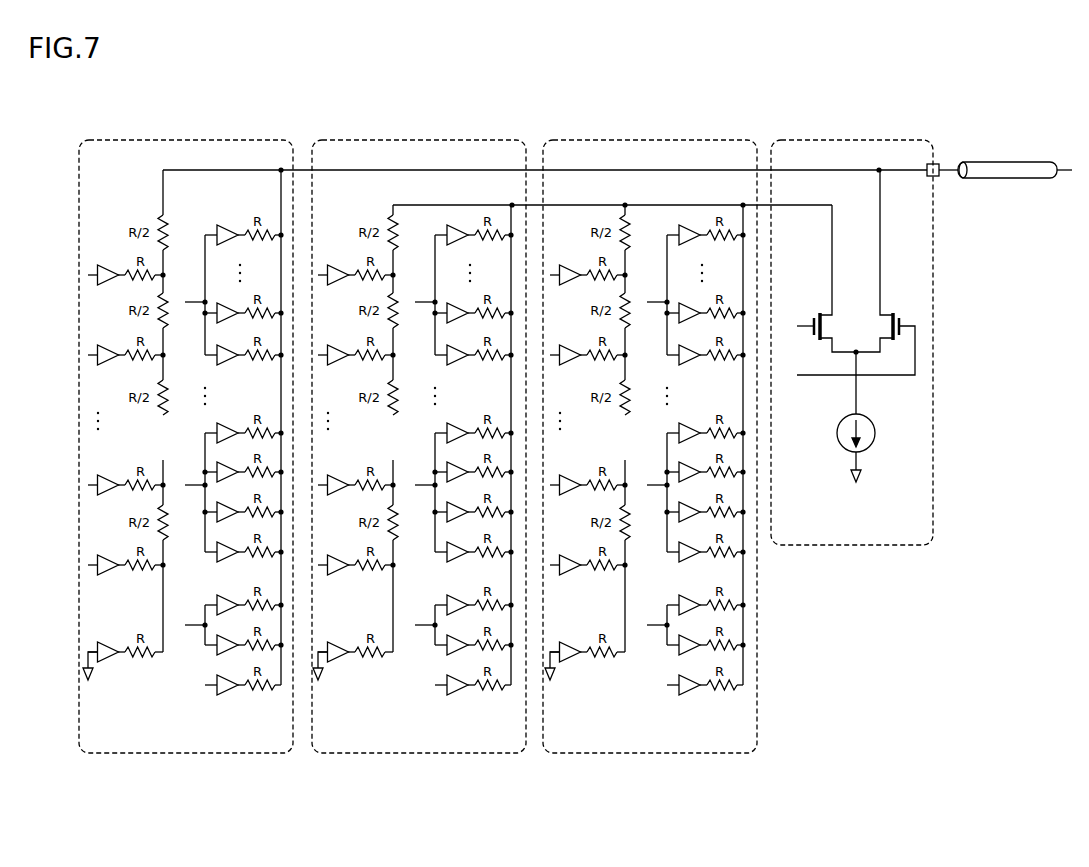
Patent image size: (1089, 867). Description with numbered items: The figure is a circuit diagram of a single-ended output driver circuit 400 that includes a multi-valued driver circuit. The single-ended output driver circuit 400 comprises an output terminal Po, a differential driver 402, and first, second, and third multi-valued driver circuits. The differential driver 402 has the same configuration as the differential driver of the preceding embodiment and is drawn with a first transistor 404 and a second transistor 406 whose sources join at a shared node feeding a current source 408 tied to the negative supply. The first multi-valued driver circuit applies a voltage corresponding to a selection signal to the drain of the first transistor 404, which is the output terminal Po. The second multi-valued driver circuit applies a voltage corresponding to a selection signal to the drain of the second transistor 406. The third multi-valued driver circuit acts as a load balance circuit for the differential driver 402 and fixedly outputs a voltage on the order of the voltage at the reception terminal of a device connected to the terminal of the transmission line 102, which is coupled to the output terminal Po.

The single-ended output driver circuit 400 is at (591, 797).
The differential driver 402 is at (800, 140).
The first transistor 404 is at (890, 311).
The second transistor 406 is at (822, 311).
The current source 408 is at (876, 434).
The transmission line 102 is at (1015, 185).